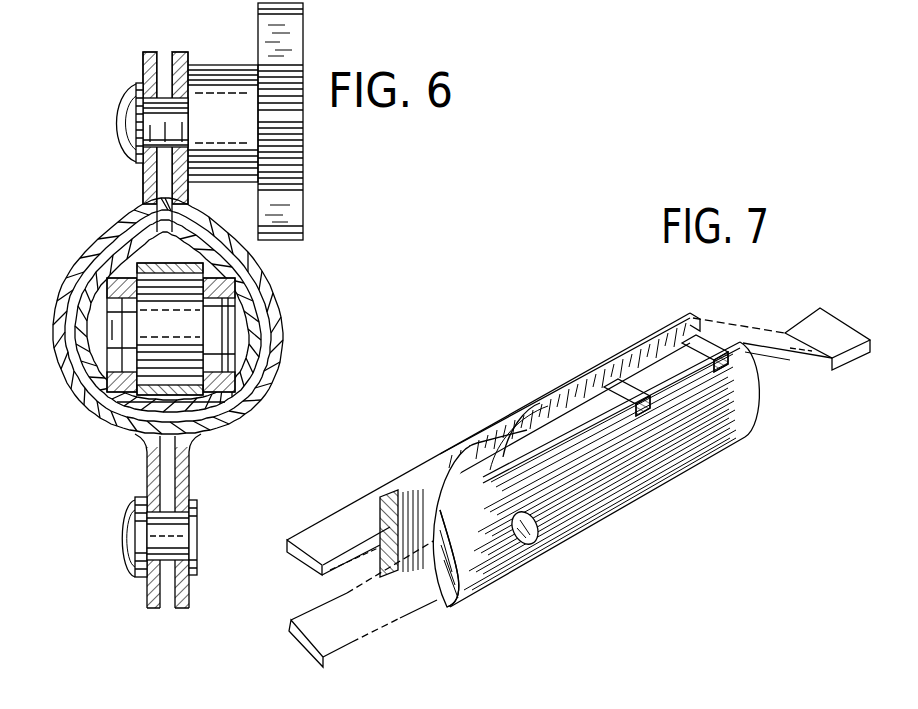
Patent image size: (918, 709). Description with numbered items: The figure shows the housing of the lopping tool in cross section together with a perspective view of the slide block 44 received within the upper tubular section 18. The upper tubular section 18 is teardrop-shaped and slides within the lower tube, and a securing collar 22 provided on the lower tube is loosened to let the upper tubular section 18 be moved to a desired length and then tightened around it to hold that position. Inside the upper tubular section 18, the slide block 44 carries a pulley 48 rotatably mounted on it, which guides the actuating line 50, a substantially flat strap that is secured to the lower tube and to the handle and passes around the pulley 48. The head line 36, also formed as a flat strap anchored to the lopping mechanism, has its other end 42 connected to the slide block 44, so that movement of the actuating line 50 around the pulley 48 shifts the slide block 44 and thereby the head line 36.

In FIG. 6, the upper tubular section 18 is at (257, 350).
In FIG. 6, the securing collar 22 is at (118, 213).
In FIG. 7, the head line 36 is at (815, 332).
In FIG. 7, the other end of head line 42 is at (795, 343).
In FIG. 6, the slide block 44 is at (103, 420).
In FIG. 7, the slide block 44 is at (675, 462).
In FIG. 6, the pulley 48 is at (187, 328).
In FIG. 7, the pulley 48 is at (428, 585).
In FIG. 6, the actuating line 50 is at (217, 433).
In FIG. 7, the actuating line 50 is at (350, 620).